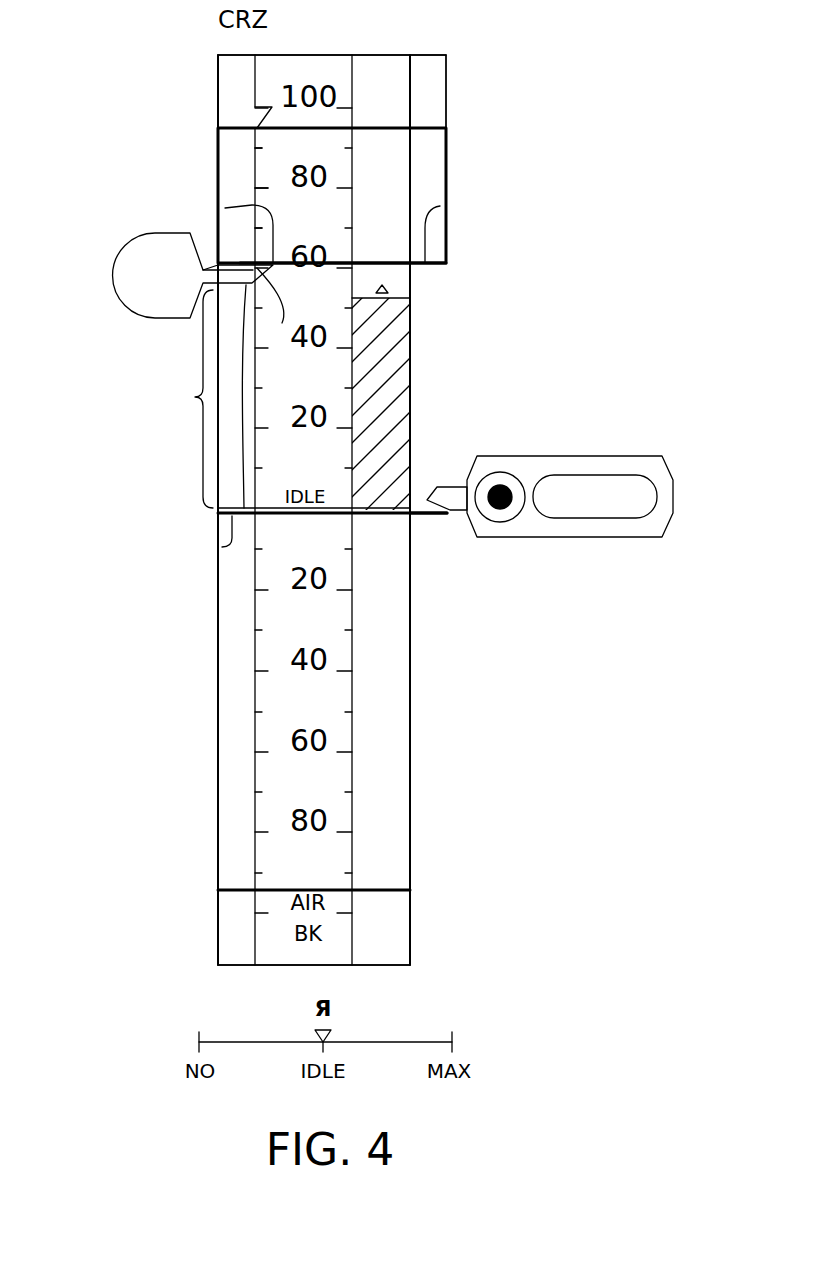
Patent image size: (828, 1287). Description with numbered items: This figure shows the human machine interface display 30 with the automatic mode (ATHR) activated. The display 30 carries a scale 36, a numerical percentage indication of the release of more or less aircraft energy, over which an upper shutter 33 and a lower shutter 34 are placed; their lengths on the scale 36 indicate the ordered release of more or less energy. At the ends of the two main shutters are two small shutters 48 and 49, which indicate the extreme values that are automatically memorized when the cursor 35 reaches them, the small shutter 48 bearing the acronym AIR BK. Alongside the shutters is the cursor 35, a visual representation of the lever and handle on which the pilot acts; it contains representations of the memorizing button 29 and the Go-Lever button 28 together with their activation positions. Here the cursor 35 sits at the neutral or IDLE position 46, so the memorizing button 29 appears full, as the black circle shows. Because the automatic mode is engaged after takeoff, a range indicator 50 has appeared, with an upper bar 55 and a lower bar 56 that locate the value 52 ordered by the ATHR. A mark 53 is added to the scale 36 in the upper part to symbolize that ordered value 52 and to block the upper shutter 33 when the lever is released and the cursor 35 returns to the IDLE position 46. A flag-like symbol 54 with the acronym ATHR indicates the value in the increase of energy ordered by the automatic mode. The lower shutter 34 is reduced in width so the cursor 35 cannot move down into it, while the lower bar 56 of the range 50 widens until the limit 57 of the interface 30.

The Go-Lever button 28 is at (630, 498).
The memorizing button 29 is at (500, 497).
The human machine interface display 30 is at (457, 307).
The upper shutter 33 is at (237, 190).
The lower shutter 34 is at (237, 712).
The cursor 35 is at (532, 470).
The scale 36 is at (275, 163).
The neutral or IDLE position 46 is at (440, 487).
The small shutter 48 is at (268, 953).
The small shutter 49 is at (305, 67).
The range indicator 50 is at (186, 399).
The ordered value 52 is at (225, 208).
The mark 53 is at (282, 323).
The flag-like symbol 54 is at (145, 253).
The upper bar 55 is at (440, 206).
The lower bar 56 is at (222, 547).
The limit 57 is at (436, 516).